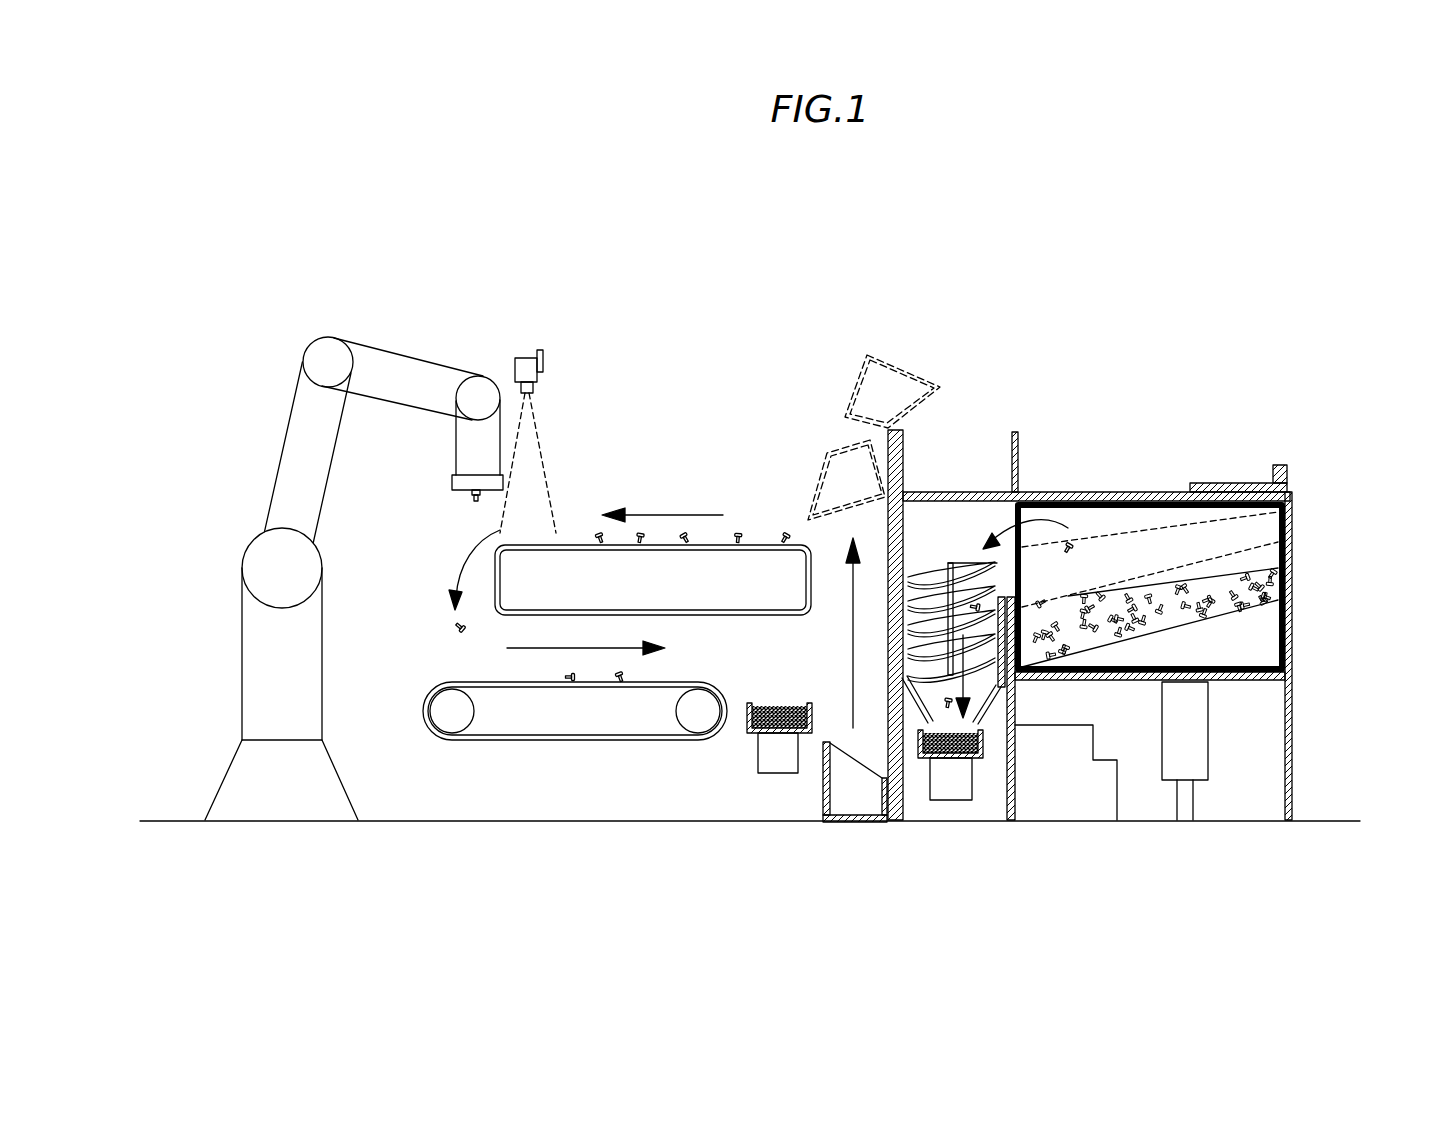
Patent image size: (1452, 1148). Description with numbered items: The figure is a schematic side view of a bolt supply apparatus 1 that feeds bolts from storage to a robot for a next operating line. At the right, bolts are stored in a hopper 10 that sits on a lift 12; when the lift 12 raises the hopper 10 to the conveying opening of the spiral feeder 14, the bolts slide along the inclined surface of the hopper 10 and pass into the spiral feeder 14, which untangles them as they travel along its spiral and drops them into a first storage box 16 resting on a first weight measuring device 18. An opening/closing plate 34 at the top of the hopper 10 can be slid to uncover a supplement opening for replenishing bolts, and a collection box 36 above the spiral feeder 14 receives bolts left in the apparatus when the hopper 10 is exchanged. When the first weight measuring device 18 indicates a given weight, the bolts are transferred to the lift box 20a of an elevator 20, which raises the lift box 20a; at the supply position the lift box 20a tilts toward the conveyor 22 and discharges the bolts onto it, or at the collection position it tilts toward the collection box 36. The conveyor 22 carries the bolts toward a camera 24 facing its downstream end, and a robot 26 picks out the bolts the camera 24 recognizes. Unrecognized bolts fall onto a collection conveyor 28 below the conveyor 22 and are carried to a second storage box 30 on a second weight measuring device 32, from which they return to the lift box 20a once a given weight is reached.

The bolt supply apparatus 1 is at (1190, 275).
The hopper 10 is at (1150, 682).
The lift 12 is at (1203, 760).
The spiral feeder 14 is at (940, 575).
The first storage box 16 is at (985, 760).
The first weight measuring device 18 is at (945, 785).
The elevator 20 is at (912, 345).
The lift box 20a is at (860, 822).
The conveyor 22 is at (756, 545).
The camera 24 is at (523, 350).
The robot 26 is at (368, 340).
The collection conveyor 28 is at (530, 745).
The second storage box 30 is at (748, 740).
The second weight measuring device 32 is at (778, 767).
The opening/closing plate 34 is at (1287, 465).
The collection box 36 is at (1015, 432).